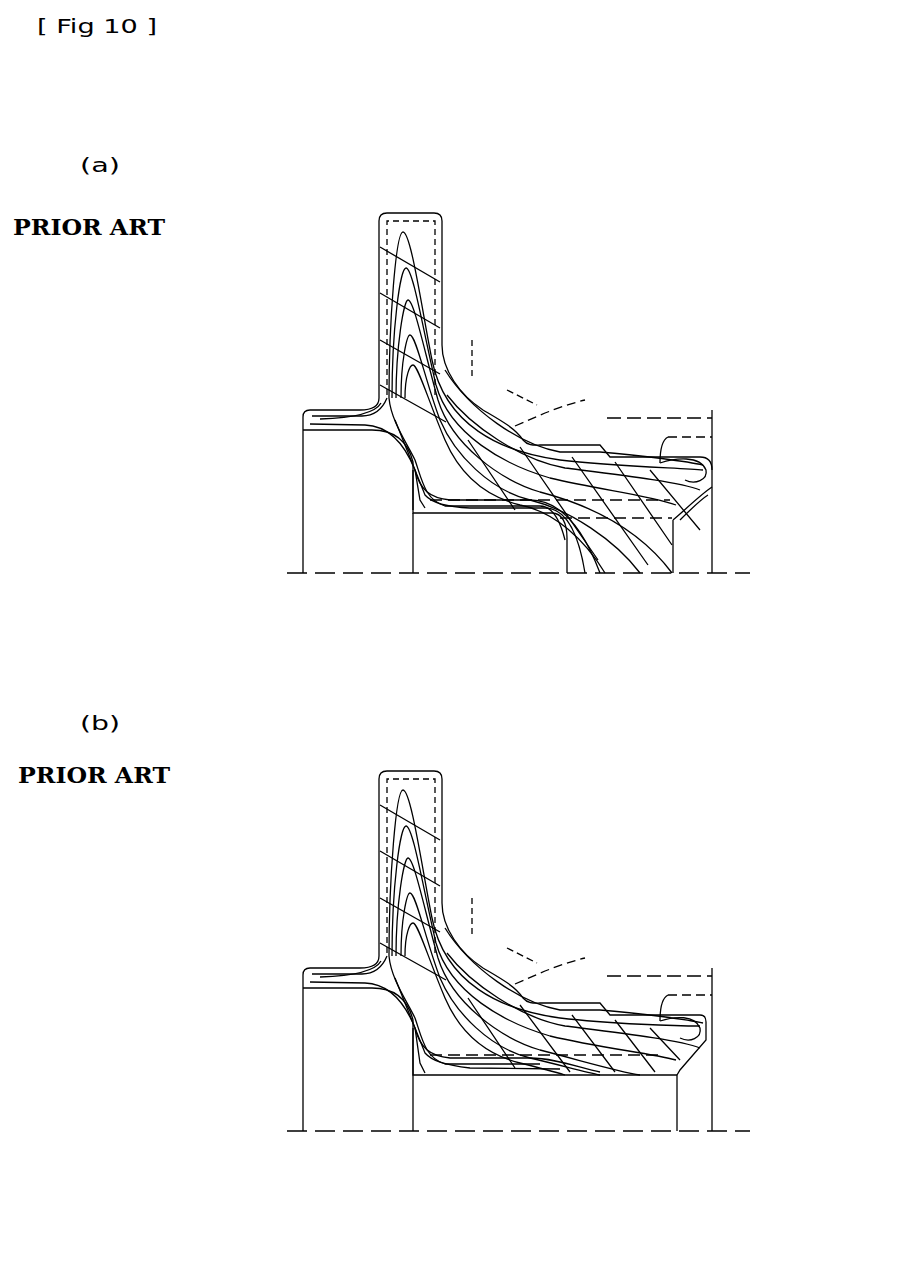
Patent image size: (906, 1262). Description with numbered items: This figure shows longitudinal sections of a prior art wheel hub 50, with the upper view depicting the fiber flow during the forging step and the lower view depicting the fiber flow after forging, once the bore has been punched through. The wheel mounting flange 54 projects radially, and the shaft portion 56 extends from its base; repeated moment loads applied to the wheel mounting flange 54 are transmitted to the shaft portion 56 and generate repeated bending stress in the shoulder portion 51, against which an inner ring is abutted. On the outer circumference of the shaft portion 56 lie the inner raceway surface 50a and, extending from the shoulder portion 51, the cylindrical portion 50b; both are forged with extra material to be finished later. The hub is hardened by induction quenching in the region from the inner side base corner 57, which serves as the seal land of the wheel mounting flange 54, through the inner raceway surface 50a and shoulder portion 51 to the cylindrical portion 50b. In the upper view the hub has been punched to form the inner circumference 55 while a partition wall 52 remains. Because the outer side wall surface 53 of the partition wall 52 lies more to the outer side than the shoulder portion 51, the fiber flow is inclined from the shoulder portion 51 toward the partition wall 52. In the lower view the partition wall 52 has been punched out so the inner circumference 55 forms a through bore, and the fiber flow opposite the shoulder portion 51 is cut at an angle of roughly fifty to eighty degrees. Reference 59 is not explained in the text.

The wheel hub 50 is at (392, 452).
The inner raceway surface 50a is at (548, 413).
The cylindrical portion 50b is at (714, 443).
The shoulder portion 51 is at (618, 447).
The partition wall 52 is at (714, 539).
The outer side wall surface 53 is at (560, 571).
The wheel mounting flange 54 is at (402, 232).
The inner circumference 55 is at (481, 515).
The shaft portion 56 is at (676, 412).
The inner side base corner 57 is at (500, 388).
The inner corner fillet 59 is at (408, 518).